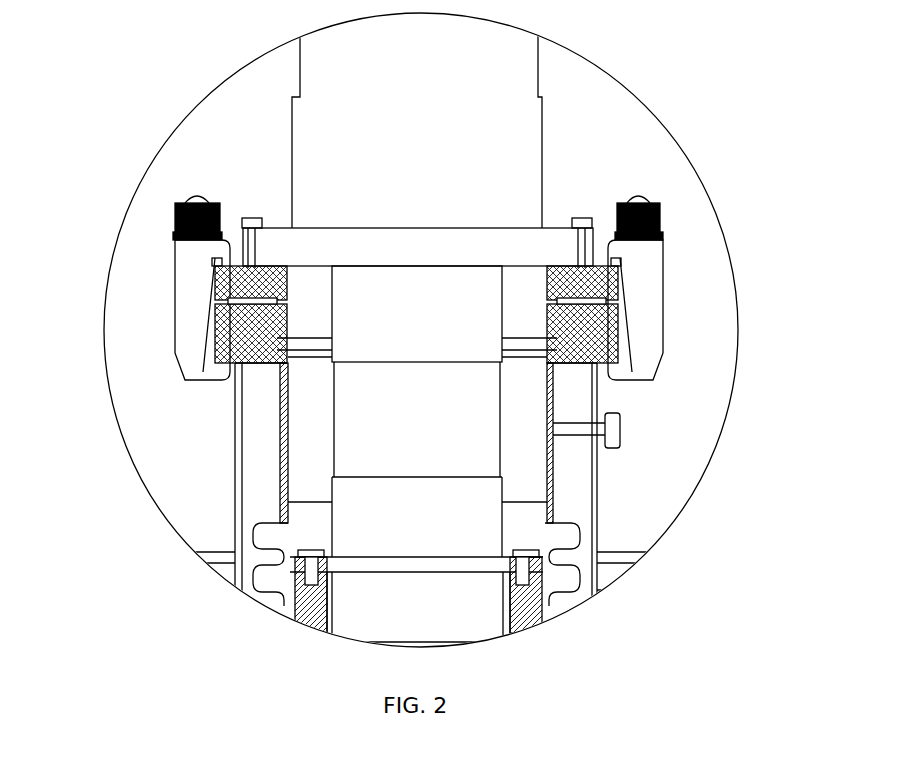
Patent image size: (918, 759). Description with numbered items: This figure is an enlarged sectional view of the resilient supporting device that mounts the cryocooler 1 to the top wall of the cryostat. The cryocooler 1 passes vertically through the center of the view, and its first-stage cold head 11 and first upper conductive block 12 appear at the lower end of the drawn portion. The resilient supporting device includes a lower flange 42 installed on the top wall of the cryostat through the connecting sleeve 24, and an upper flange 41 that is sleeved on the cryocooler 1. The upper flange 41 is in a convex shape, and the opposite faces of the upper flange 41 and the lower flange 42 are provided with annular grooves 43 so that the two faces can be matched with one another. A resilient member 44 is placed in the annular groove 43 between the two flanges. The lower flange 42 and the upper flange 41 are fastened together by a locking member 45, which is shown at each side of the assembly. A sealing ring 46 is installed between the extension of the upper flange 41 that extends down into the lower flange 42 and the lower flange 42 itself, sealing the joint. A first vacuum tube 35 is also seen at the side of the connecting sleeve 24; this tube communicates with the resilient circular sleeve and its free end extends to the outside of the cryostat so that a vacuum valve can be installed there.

The cryocooler 1 is at (532, 127).
The first-stage cold head 11 is at (480, 563).
The first upper conductive block 12 is at (527, 607).
The connecting sleeve 24 is at (600, 498).
The first vacuum tube 35 is at (624, 424).
The upper flange 41 is at (622, 260).
The lower flange 42 is at (620, 330).
The annular groove 43 is at (217, 306).
The resilient member 44 is at (620, 290).
The locking member 45 is at (192, 258).
The sealing ring 46 is at (228, 362).